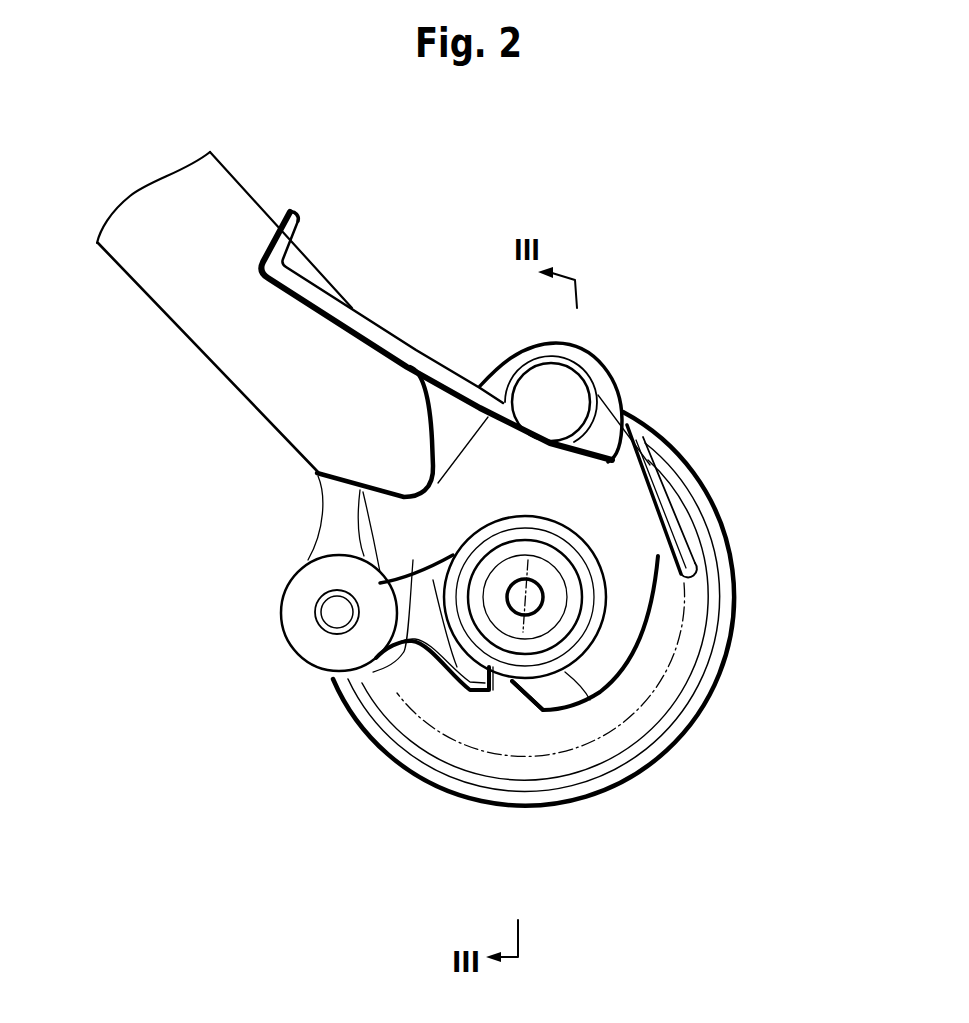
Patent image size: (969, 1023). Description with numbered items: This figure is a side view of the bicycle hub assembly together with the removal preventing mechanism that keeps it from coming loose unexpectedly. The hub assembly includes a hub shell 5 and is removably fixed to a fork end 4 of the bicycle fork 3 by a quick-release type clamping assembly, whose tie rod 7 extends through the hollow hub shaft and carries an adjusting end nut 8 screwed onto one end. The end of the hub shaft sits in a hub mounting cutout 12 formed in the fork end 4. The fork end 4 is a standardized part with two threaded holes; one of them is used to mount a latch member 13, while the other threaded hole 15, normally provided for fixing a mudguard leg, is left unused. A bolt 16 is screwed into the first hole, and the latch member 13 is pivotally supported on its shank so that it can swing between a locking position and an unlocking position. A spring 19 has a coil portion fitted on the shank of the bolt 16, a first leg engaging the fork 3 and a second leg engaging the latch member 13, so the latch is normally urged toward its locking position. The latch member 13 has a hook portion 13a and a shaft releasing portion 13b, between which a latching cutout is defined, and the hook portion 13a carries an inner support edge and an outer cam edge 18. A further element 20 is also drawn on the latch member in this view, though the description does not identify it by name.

The fork 3 is at (253, 194).
The fork end 4 is at (343, 497).
The hub shell 5 is at (720, 507).
The tie rod 7 is at (517, 606).
The adjusting end nut 8 is at (590, 613).
The hub mounting cutout 12 is at (427, 757).
The latch member 13 is at (603, 483).
The hook portion 13a is at (570, 680).
The shaft releasing portion 13b is at (363, 693).
The threaded hole 15 is at (323, 633).
The bolt 16 is at (568, 387).
The outer cam edge 18 is at (533, 703).
The spring 19 is at (447, 363).
The stop finger 20 is at (665, 510).